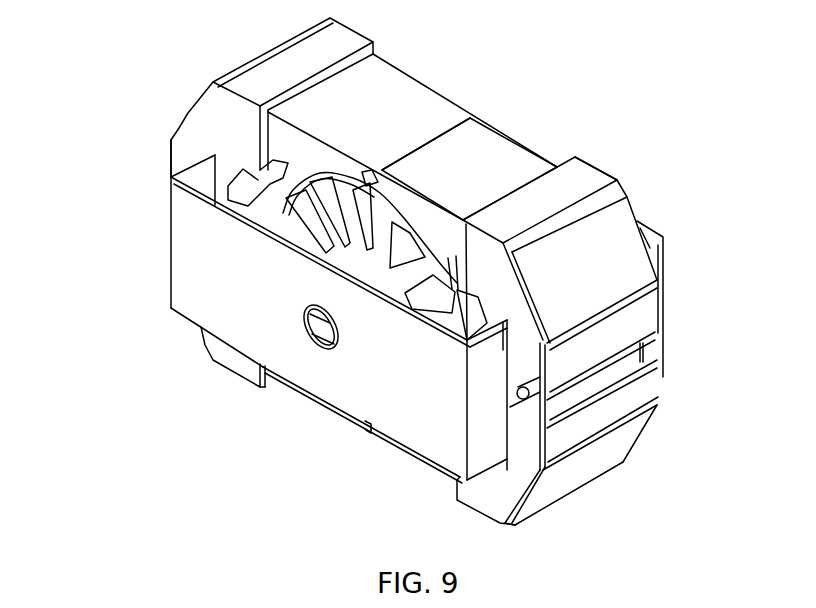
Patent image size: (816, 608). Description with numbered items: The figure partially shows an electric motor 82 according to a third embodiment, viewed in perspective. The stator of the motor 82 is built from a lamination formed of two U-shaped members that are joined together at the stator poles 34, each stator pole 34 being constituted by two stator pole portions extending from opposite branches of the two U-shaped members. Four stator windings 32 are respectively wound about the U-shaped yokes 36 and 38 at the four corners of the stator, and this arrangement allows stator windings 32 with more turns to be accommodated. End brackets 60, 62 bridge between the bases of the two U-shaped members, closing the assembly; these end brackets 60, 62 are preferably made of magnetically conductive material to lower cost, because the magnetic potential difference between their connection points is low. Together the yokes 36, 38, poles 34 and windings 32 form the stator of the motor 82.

The stator winding 32 is at (215, 130).
The stator pole 34 is at (397, 193).
The U-shaped yoke 36 is at (393, 110).
The U-shaped yoke 38 is at (507, 162).
The end bracket 60 is at (187, 263).
The end bracket 62 is at (657, 257).
The electric motor 82 is at (148, 335).